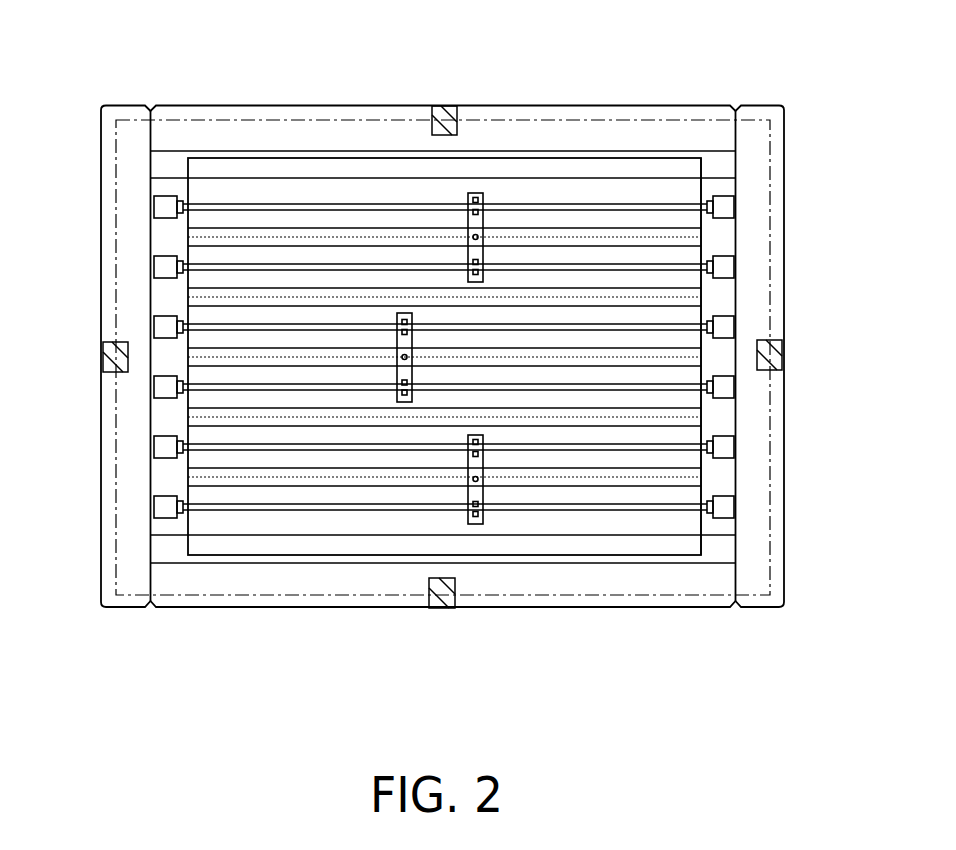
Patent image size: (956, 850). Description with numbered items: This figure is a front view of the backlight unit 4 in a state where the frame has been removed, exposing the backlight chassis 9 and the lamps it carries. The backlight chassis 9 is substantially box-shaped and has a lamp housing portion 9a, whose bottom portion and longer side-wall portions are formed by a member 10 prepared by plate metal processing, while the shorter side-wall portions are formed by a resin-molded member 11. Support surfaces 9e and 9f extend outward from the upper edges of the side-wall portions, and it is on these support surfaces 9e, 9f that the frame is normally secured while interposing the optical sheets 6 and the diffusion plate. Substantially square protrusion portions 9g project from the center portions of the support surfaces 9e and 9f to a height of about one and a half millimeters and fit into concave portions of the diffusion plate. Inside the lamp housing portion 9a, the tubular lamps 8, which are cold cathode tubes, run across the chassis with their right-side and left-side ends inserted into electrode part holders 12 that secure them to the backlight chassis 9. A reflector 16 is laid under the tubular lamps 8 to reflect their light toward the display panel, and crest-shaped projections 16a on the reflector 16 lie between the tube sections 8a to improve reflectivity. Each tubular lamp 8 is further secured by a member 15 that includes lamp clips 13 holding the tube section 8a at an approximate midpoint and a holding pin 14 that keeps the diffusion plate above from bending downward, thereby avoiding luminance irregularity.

The backlight unit 4 is at (188, 625).
The optical sheets 6 is at (771, 154).
The tubular lamps 8 is at (412, 202).
The tube section 8a is at (513, 200).
The backlight chassis 9 is at (642, 618).
The lamp housing portion 9a is at (716, 299).
The support surface 9e is at (645, 133).
The support surface 9f is at (126, 247).
The protrusion portions 9g is at (443, 108).
The member 10 is at (547, 612).
The member 11 is at (101, 445).
The electrode part holders 12 is at (167, 210).
The lamp clips 13 is at (402, 313).
The holding pin 14 is at (396, 362).
The member 15 is at (400, 380).
The reflector 16 is at (185, 285).
The projections 16a is at (192, 473).